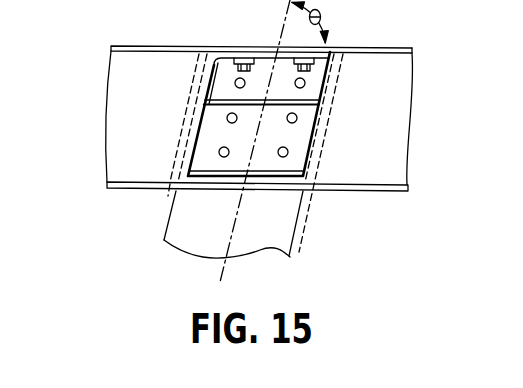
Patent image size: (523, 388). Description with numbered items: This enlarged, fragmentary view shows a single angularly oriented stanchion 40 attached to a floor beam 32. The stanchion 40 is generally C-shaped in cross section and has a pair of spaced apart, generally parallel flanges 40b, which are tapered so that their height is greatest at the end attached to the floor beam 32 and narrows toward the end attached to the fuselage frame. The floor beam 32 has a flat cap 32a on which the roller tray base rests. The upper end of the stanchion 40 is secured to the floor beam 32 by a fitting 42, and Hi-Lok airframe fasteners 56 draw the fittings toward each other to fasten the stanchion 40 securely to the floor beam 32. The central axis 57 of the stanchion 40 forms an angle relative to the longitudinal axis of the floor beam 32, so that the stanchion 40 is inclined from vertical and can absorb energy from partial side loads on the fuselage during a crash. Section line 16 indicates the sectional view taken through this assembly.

The section line 16- 16 is at (170, 40).
The floor beam 32 is at (111, 90).
The flat cap 32a is at (387, 46).
The stanchion 40 is at (188, 223).
The flange 40b is at (168, 197).
The fitting 42 is at (203, 152).
The fastener 56 is at (299, 70).
The central axis 57 is at (233, 227).